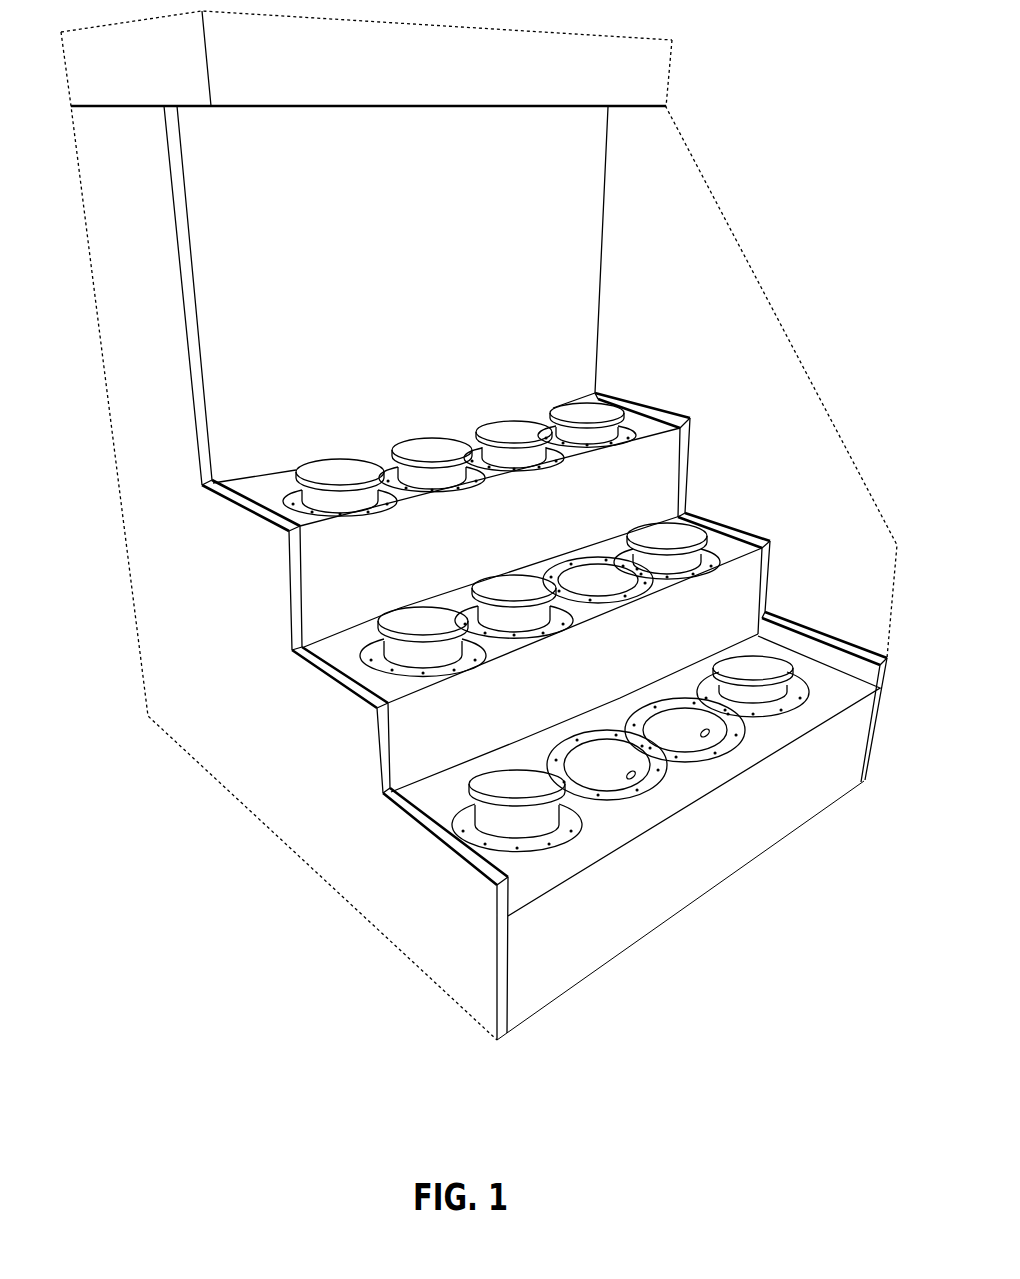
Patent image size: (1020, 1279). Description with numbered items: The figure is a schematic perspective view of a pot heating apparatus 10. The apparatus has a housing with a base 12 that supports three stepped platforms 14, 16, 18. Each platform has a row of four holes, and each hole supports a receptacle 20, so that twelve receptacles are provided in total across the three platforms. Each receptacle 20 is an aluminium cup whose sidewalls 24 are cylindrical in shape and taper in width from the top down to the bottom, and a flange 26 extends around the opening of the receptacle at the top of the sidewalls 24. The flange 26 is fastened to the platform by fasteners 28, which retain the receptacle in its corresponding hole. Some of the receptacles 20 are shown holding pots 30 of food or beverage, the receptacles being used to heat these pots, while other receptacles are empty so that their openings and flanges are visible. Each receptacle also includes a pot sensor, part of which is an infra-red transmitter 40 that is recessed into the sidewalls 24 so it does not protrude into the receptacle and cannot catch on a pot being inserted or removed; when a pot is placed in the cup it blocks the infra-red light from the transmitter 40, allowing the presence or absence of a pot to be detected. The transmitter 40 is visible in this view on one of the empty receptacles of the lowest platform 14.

The pot heating apparatus 10 is at (468, 544).
The base 12 is at (408, 964).
The platform 14 is at (549, 729).
The platform 16 is at (342, 653).
The platform 18 is at (275, 497).
The receptacle 20 is at (733, 740).
The sidewalls 24 is at (703, 870).
The flange 26 is at (658, 778).
The fasteners 28 is at (648, 787).
The pot 30 is at (532, 803).
The IR transmitter 40 is at (703, 733).